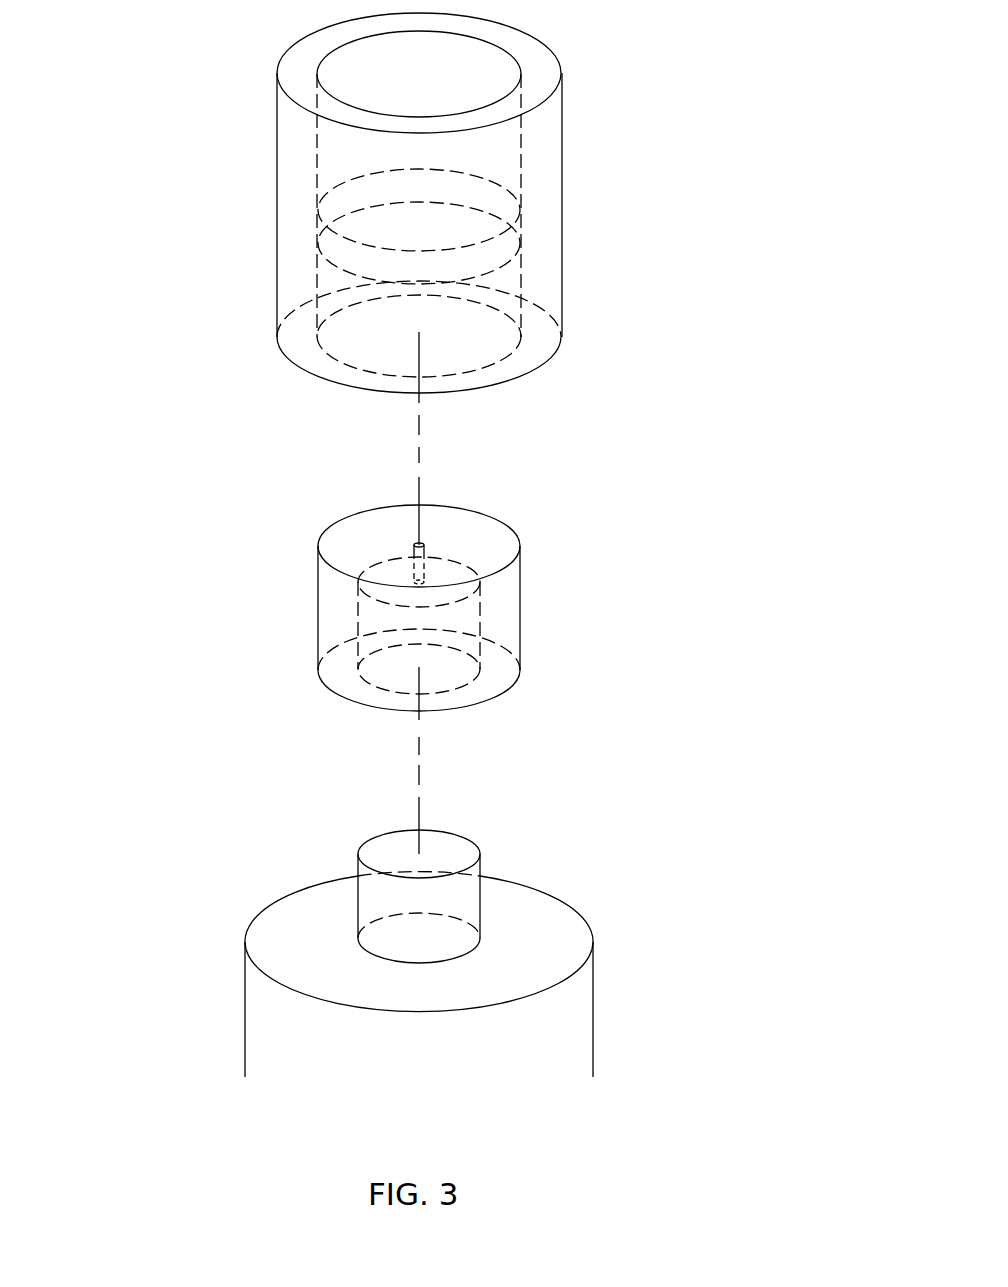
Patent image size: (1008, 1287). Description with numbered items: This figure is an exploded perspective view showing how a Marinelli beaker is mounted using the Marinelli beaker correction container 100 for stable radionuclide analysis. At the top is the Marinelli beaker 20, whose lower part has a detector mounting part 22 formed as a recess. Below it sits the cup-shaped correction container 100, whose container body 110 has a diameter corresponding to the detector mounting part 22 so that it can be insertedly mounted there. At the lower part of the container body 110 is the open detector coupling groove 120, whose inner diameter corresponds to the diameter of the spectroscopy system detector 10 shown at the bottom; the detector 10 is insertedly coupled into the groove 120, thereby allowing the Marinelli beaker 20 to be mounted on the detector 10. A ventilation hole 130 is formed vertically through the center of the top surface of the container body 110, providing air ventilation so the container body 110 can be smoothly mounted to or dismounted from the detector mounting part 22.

The spectroscopy system detector 10 is at (480, 852).
The Marinelli beaker 20 is at (562, 163).
The detector mounting part 22 is at (508, 295).
The Marinelli beaker correction container 100 is at (407, 563).
The container body 110 is at (522, 640).
The detector coupling groove 120 is at (390, 615).
The ventilation hole 130 is at (420, 545).